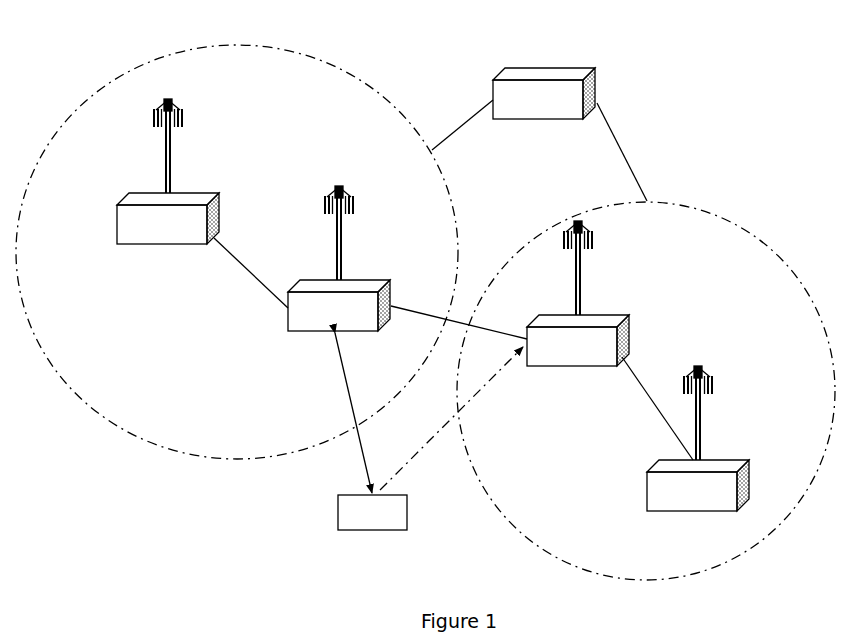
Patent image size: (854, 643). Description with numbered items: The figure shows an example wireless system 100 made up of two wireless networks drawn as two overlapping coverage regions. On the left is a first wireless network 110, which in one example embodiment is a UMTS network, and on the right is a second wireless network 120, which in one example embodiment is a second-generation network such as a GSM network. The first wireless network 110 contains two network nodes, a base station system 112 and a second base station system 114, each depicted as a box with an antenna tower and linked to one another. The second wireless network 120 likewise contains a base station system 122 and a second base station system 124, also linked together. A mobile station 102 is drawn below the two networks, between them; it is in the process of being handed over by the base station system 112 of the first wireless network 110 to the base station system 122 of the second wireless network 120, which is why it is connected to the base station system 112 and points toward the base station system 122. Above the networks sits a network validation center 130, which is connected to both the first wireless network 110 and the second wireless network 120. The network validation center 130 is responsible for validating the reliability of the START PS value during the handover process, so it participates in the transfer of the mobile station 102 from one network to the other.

The wireless system 100 is at (801, 72).
The mobile station 102 is at (338, 513).
The first wireless network 110 is at (137, 440).
The base station system 112 is at (390, 280).
The second base station system 114 is at (163, 248).
The second wireless network 120 is at (528, 538).
The base station system 122 is at (570, 366).
The second base station system 124 is at (647, 487).
The network validation center 130 is at (597, 68).